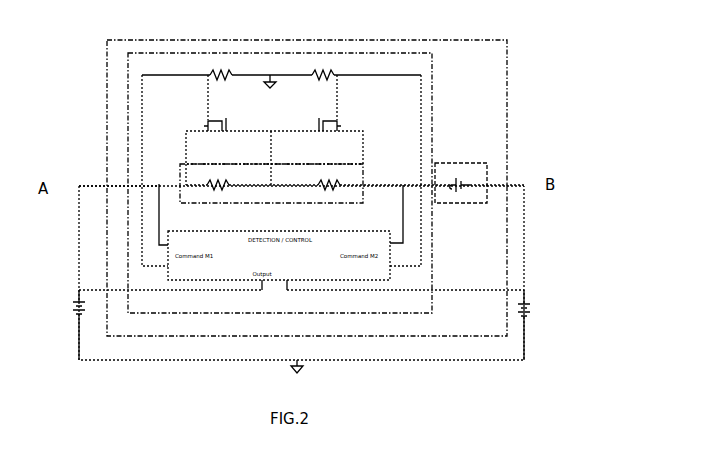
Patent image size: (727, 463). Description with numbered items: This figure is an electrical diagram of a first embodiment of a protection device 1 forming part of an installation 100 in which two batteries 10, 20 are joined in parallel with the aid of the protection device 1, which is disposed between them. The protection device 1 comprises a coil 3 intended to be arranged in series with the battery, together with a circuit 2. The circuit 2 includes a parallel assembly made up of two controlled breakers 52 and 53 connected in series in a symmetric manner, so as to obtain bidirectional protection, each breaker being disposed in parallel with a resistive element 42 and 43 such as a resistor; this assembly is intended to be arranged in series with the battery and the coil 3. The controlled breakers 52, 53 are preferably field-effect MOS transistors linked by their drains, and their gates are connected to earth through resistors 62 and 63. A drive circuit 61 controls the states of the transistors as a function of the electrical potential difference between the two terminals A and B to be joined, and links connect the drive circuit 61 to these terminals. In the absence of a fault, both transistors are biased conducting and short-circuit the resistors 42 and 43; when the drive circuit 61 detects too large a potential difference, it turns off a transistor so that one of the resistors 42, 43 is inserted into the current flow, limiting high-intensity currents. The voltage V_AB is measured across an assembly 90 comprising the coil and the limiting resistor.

The protection device 1 is at (507, 77).
The circuit 2 is at (432, 70).
The coil 3 is at (475, 175).
The battery 10 is at (75, 309).
The battery 20 is at (540, 311).
The resistive element 42 is at (323, 193).
The resistive element 43 is at (205, 193).
The controlled breaker 52 is at (330, 120).
The controlled breaker 53 is at (222, 120).
The drive circuit 61 is at (337, 280).
The resistor 62 is at (320, 62).
The resistor 63 is at (222, 62).
The assembly 90 is at (180, 172).
The installation 100 is at (538, 98).